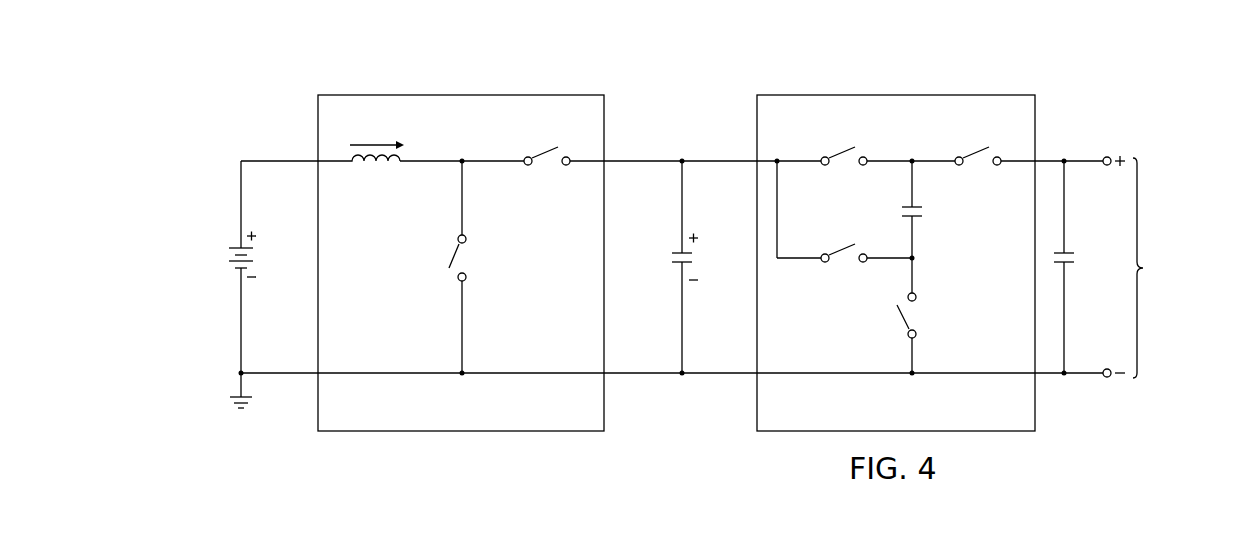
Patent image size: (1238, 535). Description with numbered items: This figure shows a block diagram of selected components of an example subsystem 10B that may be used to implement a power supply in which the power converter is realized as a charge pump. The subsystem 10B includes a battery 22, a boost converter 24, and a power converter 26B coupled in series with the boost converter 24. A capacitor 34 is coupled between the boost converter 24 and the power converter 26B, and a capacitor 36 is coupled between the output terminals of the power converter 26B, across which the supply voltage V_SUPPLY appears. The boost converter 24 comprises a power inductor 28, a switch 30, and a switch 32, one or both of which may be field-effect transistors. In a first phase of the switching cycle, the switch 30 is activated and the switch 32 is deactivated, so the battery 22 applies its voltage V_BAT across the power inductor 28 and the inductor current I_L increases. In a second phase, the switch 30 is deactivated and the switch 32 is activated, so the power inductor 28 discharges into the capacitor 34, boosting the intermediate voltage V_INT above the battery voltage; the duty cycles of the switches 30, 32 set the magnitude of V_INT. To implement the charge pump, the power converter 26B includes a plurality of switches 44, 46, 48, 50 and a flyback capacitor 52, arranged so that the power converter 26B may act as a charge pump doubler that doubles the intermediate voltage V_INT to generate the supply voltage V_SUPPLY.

The subsystem 10B is at (1066, 56).
The battery 22 is at (226, 256).
The boost converter 24 is at (316, 131).
The power converter 26B is at (1040, 132).
The power inductor 28 is at (373, 170).
The switch 30 is at (450, 258).
The switch 32 is at (548, 152).
The capacitor 34 is at (670, 258).
The capacitor 36 is at (1075, 258).
The switch 44 is at (843, 152).
The switch 46 is at (978, 152).
The switch 48 is at (843, 249).
The switch 50 is at (903, 318).
The flyback capacitor 52 is at (922, 211).